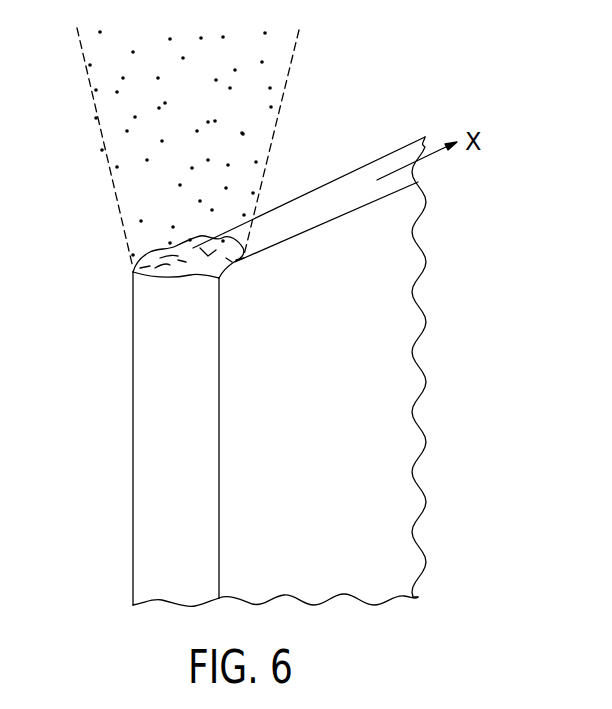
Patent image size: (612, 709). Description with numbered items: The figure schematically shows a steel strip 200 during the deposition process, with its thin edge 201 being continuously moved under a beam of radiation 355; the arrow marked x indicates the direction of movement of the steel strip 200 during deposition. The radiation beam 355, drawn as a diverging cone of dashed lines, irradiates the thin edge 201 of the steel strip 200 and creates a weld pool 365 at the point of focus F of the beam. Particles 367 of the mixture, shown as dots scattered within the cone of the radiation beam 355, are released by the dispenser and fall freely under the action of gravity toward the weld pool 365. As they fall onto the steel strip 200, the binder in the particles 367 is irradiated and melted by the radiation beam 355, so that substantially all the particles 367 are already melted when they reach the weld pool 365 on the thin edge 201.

The radiation beam 355 is at (297, 43).
The particles 367 is at (140, 190).
The thin edge 201 is at (323, 200).
The steel strip 200 is at (380, 482).
The weld pool 365 is at (232, 273).
The point of focus F is at (187, 273).